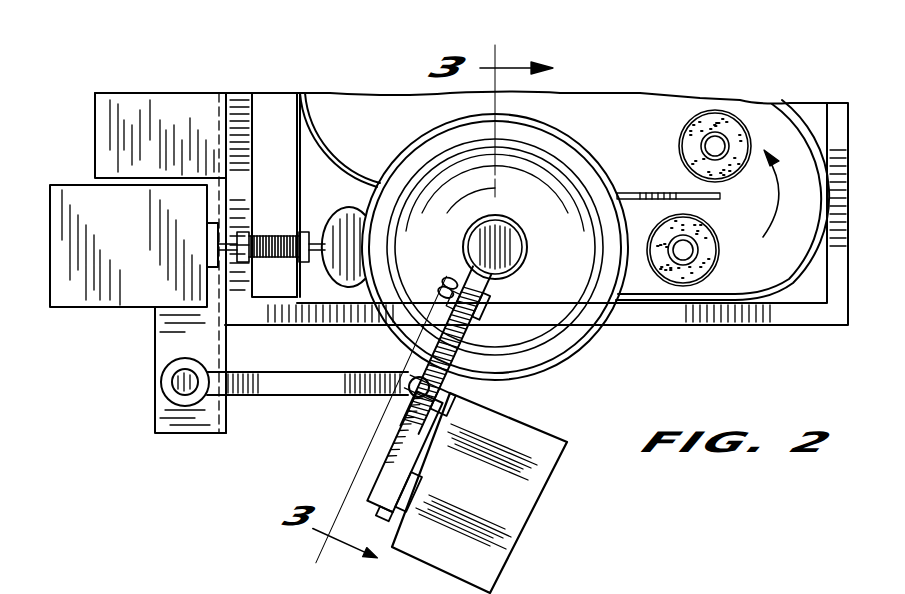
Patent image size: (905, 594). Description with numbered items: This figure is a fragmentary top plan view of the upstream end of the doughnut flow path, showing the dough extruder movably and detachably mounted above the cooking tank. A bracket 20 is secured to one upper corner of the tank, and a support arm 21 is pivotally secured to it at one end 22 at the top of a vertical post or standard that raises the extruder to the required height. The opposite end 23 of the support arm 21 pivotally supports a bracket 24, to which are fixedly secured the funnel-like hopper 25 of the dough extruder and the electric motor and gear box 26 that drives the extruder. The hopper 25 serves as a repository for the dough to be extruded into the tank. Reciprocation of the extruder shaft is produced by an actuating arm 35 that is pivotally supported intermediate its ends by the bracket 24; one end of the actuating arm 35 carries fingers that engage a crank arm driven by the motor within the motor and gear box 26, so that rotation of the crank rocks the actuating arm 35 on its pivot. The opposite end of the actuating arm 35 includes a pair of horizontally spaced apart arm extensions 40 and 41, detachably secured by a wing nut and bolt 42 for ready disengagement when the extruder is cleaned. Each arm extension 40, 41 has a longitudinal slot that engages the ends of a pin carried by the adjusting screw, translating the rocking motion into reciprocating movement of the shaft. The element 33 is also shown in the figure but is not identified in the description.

The bracket 20 is at (205, 432).
The support arm 21 is at (320, 394).
The end of support arm 22 is at (172, 381).
The opposite end of support arm 23 is at (405, 398).
The bracket 24 is at (428, 395).
The funnel-like hopper 25 is at (598, 338).
The electric motor and gear box 26 is at (541, 500).
The hub / shaft 33 is at (515, 237).
The actuating arm 35 is at (408, 458).
The arm extension 40 is at (445, 350).
The arm extension 41 is at (468, 300).
The wing nut and bolt 42 is at (447, 287).